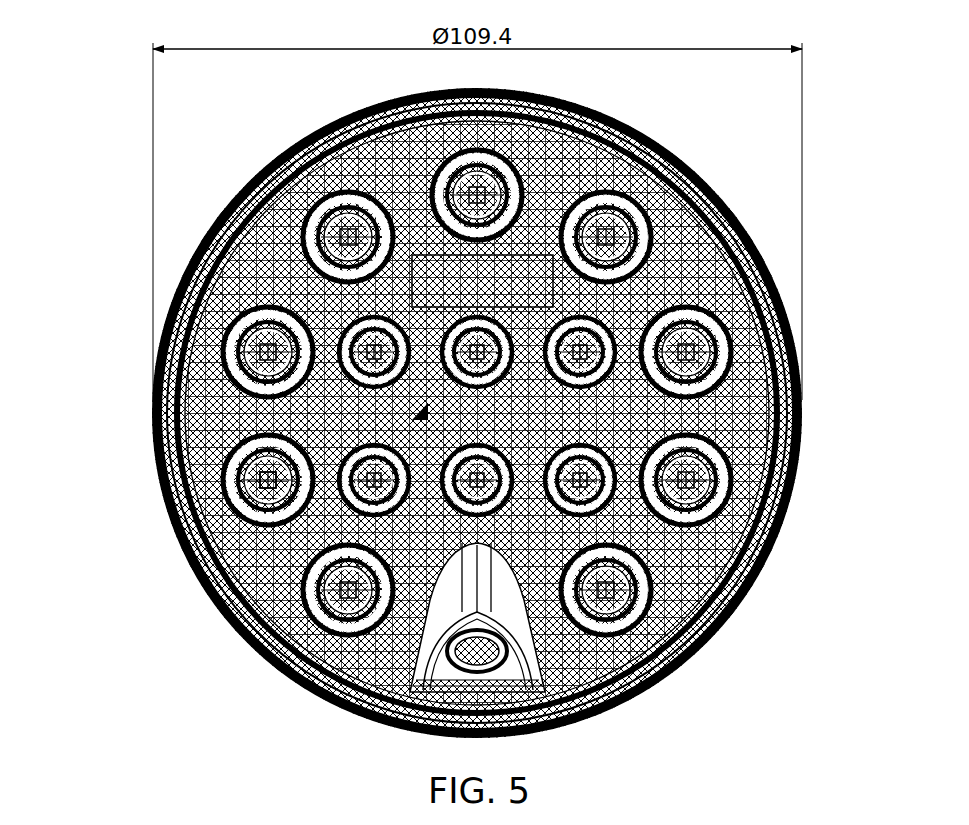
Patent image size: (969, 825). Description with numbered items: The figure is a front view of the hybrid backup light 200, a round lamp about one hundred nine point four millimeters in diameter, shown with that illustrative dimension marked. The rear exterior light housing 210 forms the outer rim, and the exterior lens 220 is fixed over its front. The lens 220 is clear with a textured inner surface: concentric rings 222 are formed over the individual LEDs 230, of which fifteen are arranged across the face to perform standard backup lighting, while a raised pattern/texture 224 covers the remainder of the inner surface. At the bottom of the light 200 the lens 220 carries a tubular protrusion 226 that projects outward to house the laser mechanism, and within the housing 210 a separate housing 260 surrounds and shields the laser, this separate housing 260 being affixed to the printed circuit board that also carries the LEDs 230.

The hybrid backup light 200 is at (131, 150).
The rear exterior light housing 210 is at (776, 284).
The exterior lens 220 is at (737, 412).
The concentric rings 222 is at (232, 465).
The raised pattern/texture 224 is at (265, 572).
The tubular protrusion 226 is at (503, 592).
The LEDs 230 is at (262, 482).
The separate housing 260 is at (450, 660).